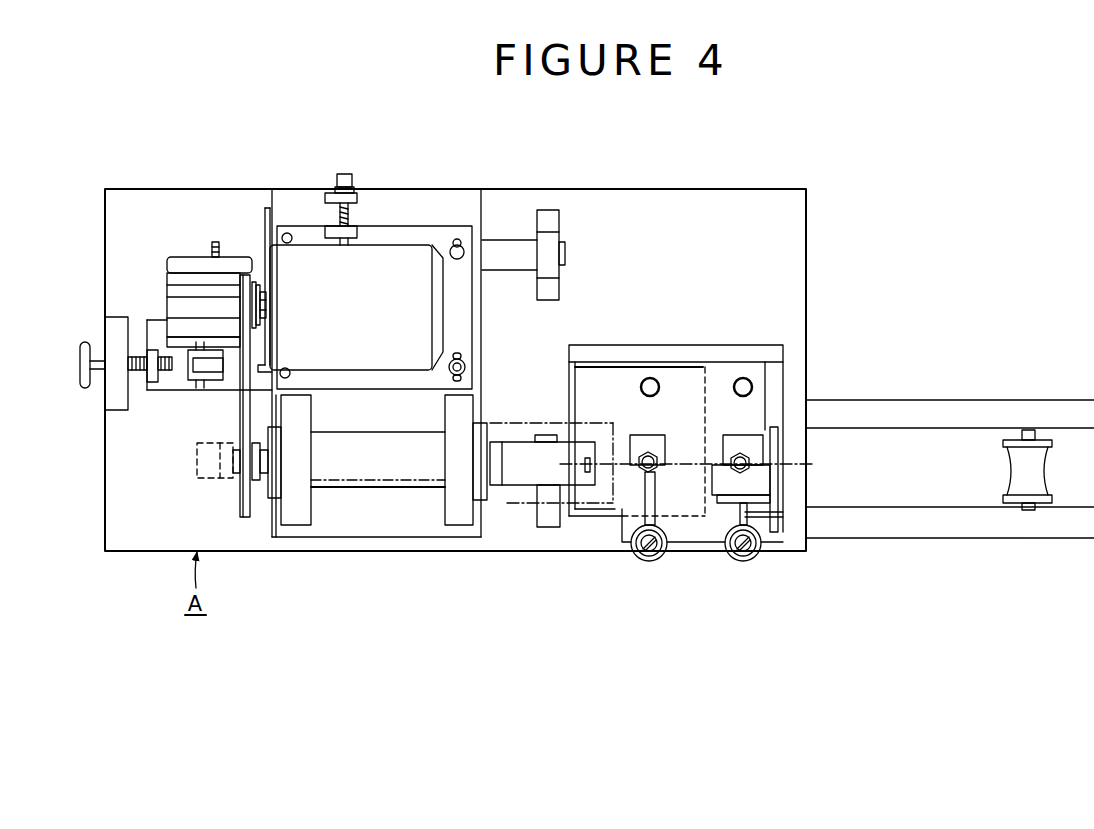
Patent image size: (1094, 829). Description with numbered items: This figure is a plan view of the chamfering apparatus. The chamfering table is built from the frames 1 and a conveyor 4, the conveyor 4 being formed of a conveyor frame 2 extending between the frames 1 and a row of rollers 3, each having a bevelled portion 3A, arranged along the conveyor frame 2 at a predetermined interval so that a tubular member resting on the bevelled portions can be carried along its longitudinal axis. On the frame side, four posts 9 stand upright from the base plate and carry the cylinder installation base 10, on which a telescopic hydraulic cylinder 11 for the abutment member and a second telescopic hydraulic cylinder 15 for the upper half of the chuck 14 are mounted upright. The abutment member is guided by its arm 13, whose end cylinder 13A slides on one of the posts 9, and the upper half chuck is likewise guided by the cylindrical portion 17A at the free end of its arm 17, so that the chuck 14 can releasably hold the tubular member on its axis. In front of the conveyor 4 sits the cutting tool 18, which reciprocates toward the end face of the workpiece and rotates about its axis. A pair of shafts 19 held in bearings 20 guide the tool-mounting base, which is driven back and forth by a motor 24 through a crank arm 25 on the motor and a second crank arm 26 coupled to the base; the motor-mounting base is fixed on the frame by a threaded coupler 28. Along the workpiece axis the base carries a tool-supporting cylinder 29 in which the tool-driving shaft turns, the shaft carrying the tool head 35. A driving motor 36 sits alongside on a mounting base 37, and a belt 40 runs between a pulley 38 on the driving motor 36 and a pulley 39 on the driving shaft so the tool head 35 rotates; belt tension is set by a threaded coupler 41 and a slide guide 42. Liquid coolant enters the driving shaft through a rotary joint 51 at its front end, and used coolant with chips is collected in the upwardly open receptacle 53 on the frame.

The frame 1 is at (796, 318).
The conveyor frame 2 is at (1046, 523).
The roller 3 is at (1003, 495).
The bevelled portion 3A is at (1042, 470).
The conveyor 4 is at (1010, 399).
The post 9 is at (740, 378).
The cylinder installation base 10 is at (784, 394).
The telescopic hydraulic cylinder 11 is at (640, 438).
The arm 13 is at (650, 498).
The end cylinder 13A is at (641, 560).
The chuck 14 is at (767, 522).
The telescopic hydraulic cylinder 15 is at (745, 437).
The arm 17 is at (784, 514).
The cylindrical portion 17A is at (742, 561).
The cutting tool 18 is at (400, 503).
The shaft 19 is at (513, 248).
The bearing 20 is at (560, 224).
The motor 24 is at (165, 270).
The crank arm 25 is at (185, 368).
The crank arm 26 is at (230, 370).
The threaded coupler 28 is at (135, 372).
The tool-supporting cylinder 29 is at (348, 487).
The tool head 35 is at (520, 490).
The driving motor 36 is at (398, 265).
The mounting base 37 is at (452, 226).
The pulley 38 is at (262, 300).
The pulley 39 is at (240, 500).
The belt 40 is at (265, 368).
The threaded coupler 41 is at (350, 220).
The slide guide 42 is at (466, 367).
The rotary joint 51 is at (215, 468).
The receptacle 53 is at (570, 410).